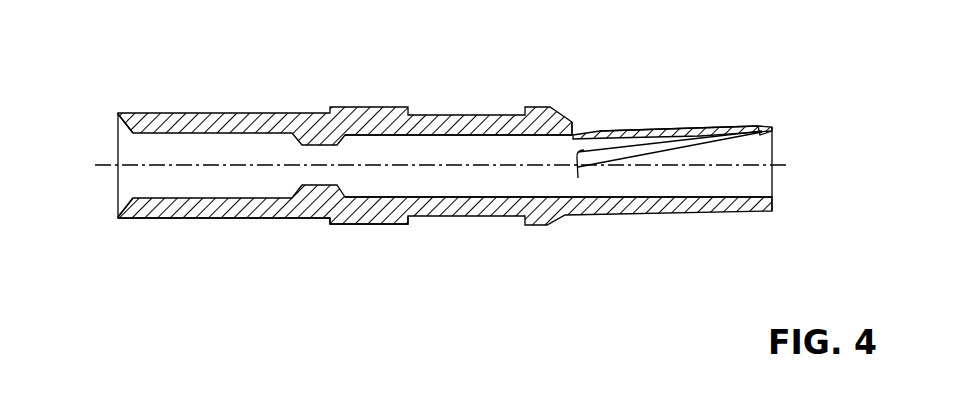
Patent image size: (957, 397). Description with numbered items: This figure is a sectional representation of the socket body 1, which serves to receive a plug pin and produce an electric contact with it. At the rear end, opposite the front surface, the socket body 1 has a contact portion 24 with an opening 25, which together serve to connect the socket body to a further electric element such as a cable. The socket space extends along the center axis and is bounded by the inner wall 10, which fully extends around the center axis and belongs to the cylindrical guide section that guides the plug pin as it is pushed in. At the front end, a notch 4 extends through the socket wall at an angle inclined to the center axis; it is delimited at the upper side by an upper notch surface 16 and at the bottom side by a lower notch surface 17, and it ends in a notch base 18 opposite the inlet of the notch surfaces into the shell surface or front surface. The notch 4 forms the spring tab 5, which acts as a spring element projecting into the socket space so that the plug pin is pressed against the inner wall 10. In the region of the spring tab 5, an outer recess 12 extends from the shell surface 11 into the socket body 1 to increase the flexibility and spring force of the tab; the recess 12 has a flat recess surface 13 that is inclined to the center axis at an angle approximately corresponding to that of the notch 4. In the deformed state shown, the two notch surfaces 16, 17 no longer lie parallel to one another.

The socket body 1 is at (470, 122).
The contact portion 24 is at (247, 125).
The opening 25 is at (253, 207).
The shell surface 11 is at (392, 225).
The inner wall 10 is at (510, 165).
The notch base 18 is at (573, 160).
The upper notch surface 16 is at (597, 154).
The lower notch surface 17 is at (672, 148).
The notch 4 is at (610, 158).
The outer recess 12 is at (628, 133).
The flat recess surface 13 is at (679, 85).
The spring tab 5 is at (682, 133).